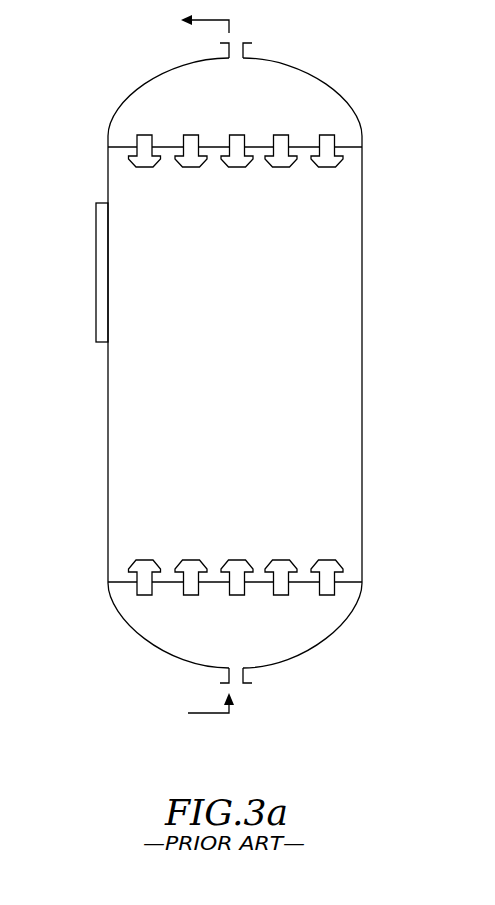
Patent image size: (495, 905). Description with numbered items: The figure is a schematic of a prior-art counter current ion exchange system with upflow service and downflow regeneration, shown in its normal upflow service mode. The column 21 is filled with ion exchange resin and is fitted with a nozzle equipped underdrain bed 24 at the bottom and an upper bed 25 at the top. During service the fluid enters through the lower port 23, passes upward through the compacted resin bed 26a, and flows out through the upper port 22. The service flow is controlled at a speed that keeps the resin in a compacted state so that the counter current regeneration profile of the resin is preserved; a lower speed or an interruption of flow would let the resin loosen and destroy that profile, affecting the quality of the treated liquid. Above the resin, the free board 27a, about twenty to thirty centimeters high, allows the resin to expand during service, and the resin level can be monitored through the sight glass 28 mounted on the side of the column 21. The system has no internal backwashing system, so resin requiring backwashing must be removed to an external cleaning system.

The column 21 is at (363, 312).
The port 22 is at (252, 43).
The port 23 is at (252, 681).
The nozzle equipped underdrain bed 24 is at (334, 563).
The upper bed 25 is at (333, 165).
The compacted resin bed 26a is at (258, 388).
The free board 27a is at (258, 518).
The sight glass 28 is at (96, 276).